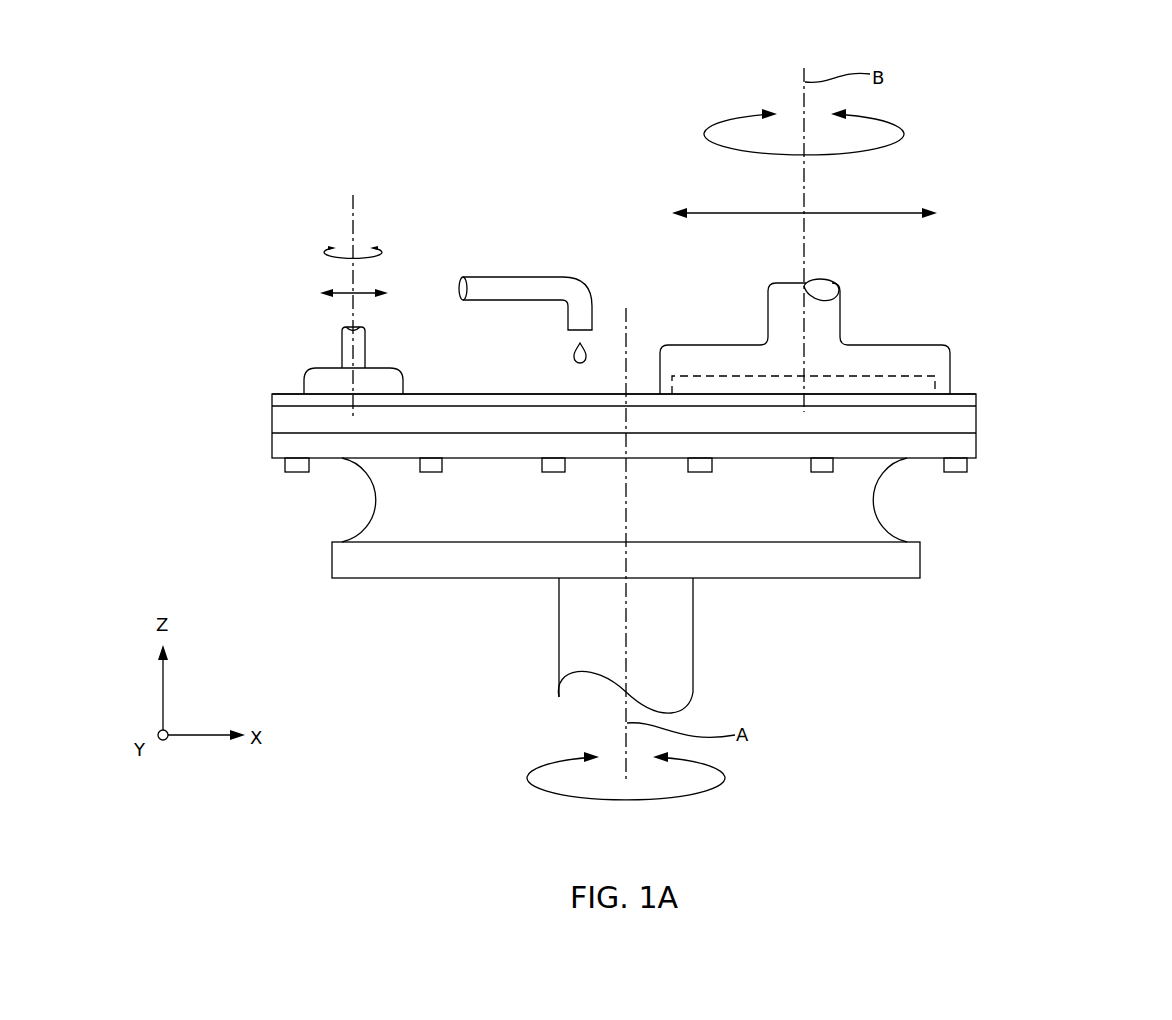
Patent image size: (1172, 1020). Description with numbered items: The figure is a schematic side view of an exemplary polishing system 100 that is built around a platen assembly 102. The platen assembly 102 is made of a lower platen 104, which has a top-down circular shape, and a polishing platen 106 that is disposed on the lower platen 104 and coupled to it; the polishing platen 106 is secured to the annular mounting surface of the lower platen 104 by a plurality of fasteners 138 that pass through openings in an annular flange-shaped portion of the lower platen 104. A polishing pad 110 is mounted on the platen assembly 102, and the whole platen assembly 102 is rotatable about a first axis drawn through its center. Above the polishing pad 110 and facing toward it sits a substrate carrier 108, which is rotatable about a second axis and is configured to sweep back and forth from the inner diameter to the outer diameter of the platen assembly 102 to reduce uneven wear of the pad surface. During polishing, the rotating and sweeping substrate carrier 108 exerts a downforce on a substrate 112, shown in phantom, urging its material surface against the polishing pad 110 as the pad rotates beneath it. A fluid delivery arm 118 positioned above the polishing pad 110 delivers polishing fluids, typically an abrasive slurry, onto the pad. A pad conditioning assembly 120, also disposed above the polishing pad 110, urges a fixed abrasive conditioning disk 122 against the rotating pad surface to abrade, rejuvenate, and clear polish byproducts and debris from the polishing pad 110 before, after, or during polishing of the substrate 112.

The polishing system 100 is at (1033, 88).
The platen assembly 102 is at (1061, 372).
The lower platen 104 is at (747, 517).
The polishing platen 106 is at (963, 418).
The substrate carrier 108 is at (952, 363).
The polishing pad 110 is at (503, 400).
The substrate 112 is at (706, 388).
The fluid delivery arm 118 is at (503, 277).
The pad conditioning assembly 120 is at (286, 330).
The conditioning disk 122 is at (385, 382).
The fasteners 138 is at (833, 463).